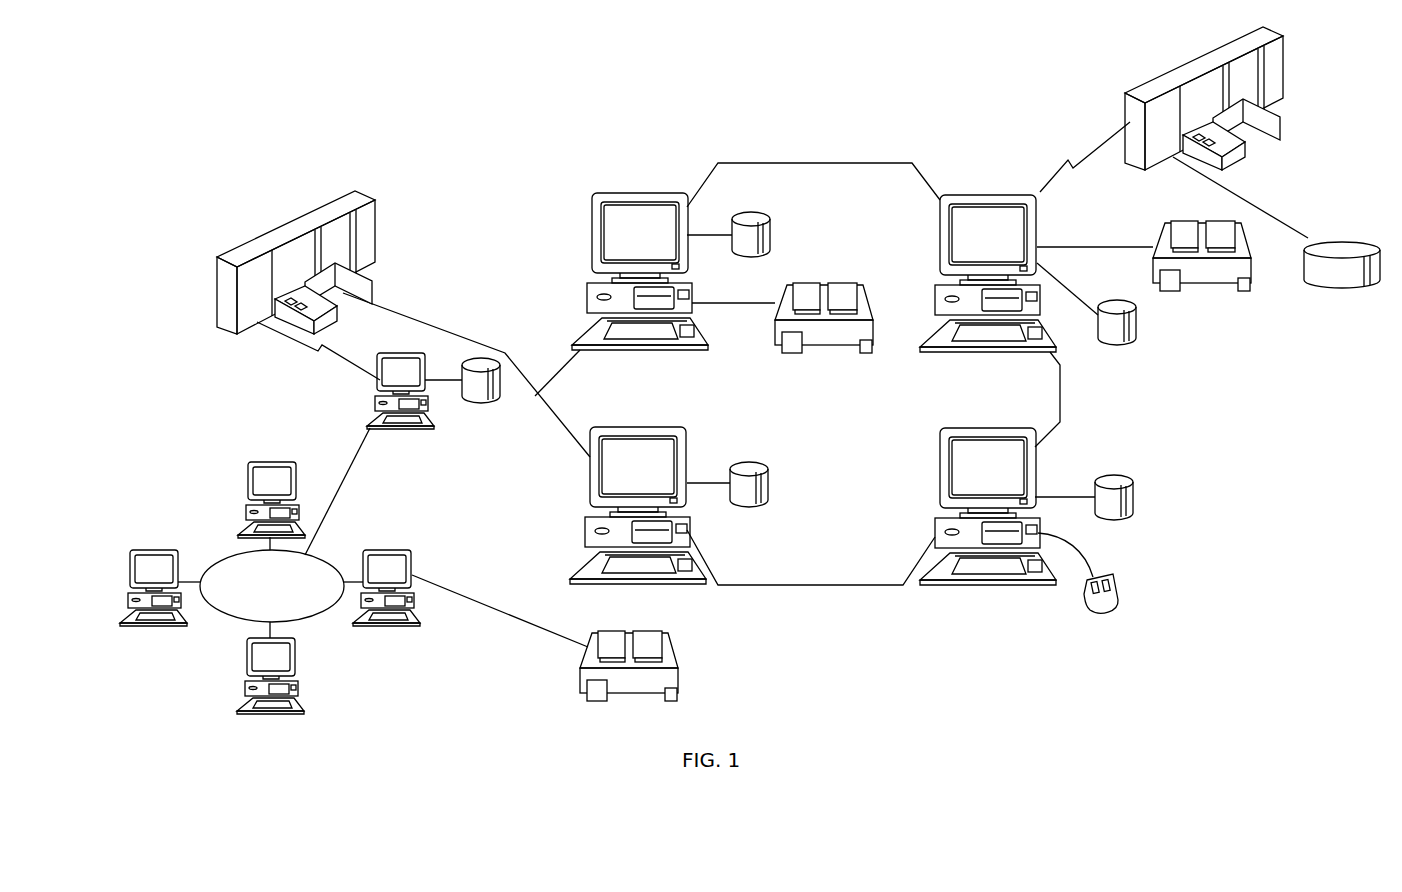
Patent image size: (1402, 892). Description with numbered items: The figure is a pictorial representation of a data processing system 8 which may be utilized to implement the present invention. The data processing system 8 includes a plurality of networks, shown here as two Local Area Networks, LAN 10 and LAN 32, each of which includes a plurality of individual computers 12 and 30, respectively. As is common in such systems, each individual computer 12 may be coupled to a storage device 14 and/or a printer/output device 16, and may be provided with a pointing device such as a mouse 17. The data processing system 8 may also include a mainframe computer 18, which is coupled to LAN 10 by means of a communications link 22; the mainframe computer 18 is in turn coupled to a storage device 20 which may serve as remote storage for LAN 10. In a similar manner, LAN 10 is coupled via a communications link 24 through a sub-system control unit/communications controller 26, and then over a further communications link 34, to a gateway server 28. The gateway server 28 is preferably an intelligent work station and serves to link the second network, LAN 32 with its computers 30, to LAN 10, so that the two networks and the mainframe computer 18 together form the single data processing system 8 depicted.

The data processing system 8 is at (838, 142).
The Local Area Network 10 is at (822, 585).
The individual computer 12 is at (640, 194).
The storage device 14 is at (765, 214).
The printer/output device 16 is at (826, 284).
The mouse 17 is at (1118, 590).
The mainframe computer 18 is at (1215, 57).
The storage device 20 is at (1335, 243).
The communications link 22 is at (1108, 125).
The communications link 24 is at (417, 322).
The sub-system control unit/communications controller 26 is at (358, 189).
The gateway server 28 is at (395, 352).
The individual computer 30 is at (268, 462).
The Local Area Network 32 is at (230, 620).
The communications link 34 is at (278, 338).